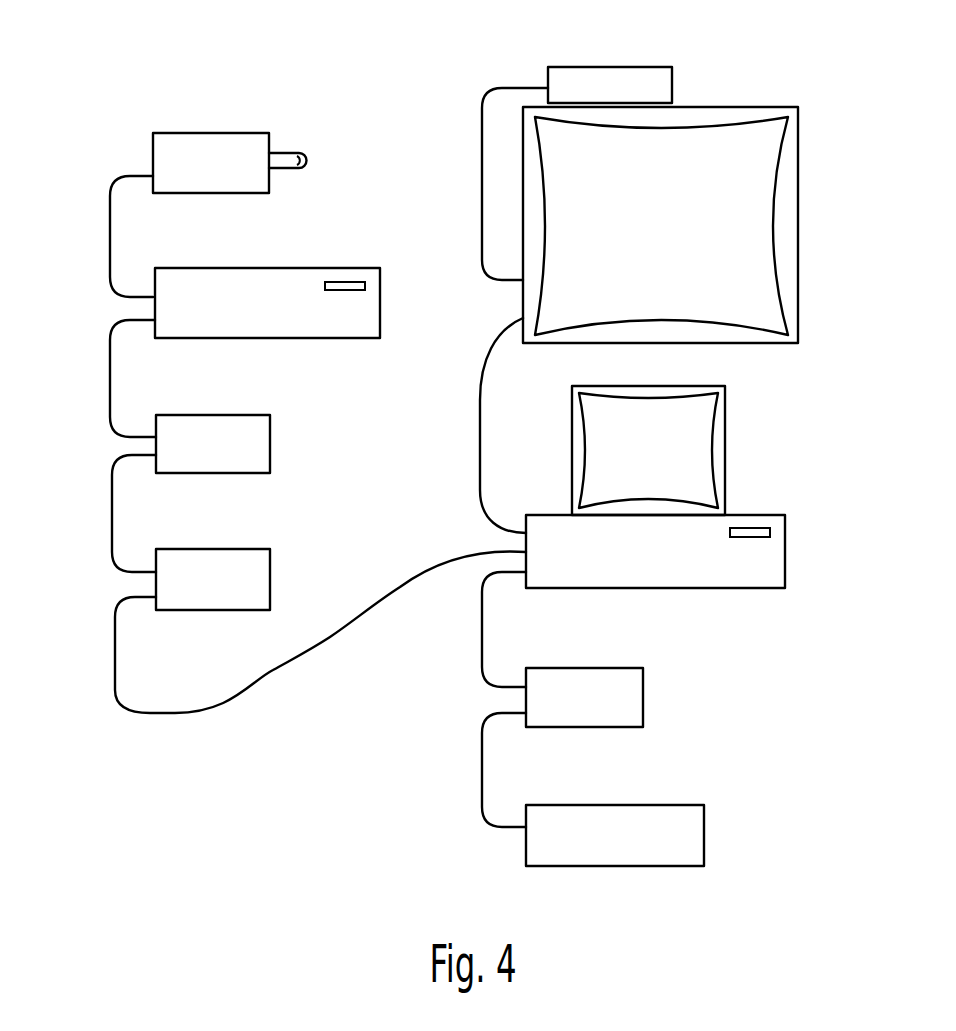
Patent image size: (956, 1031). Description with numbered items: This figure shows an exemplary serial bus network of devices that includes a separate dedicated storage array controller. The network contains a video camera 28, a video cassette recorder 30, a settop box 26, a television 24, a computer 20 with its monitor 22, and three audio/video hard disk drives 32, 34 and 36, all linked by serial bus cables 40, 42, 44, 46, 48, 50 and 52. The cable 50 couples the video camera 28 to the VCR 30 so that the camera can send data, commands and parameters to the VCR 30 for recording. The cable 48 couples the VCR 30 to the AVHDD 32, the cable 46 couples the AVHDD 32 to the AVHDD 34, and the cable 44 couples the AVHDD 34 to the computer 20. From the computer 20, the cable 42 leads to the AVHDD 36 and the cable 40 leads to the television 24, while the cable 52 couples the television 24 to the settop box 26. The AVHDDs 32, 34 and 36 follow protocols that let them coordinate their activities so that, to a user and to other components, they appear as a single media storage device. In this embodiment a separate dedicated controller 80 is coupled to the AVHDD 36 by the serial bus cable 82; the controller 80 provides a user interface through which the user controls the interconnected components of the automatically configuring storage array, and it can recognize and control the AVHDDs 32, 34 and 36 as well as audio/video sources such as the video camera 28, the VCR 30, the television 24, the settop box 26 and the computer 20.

The computer 20 is at (785, 550).
The computer monitor 22 is at (725, 455).
The television 24 is at (798, 222).
The settop box 26 is at (609, 67).
The video camera 28 is at (210, 133).
The video cassette recorder (VCR) 30 is at (380, 300).
The audio/video hard disk drive (AVHDD) 32 is at (272, 442).
The audio/video hard disk drive (AVHDD) 34 is at (272, 577).
The audio/video hard disk drive (AVHDD) 36 is at (645, 695).
The IEEE 1394-1995 cable 40 is at (480, 435).
The IEEE 1394-1995 cable 42 is at (482, 628).
The IEEE 1394-1995 cable 44 is at (115, 652).
The IEEE 1394-1995 cable 46 is at (112, 515).
The IEEE 1394-1995 cable 48 is at (110, 378).
The IEEE 1394-1995 cable 50 is at (110, 240).
The IEEE 1394-1995 cable 52 is at (482, 190).
The dedicated controller 80 is at (706, 833).
The IEEE 1394-1995 cable 82 is at (482, 770).